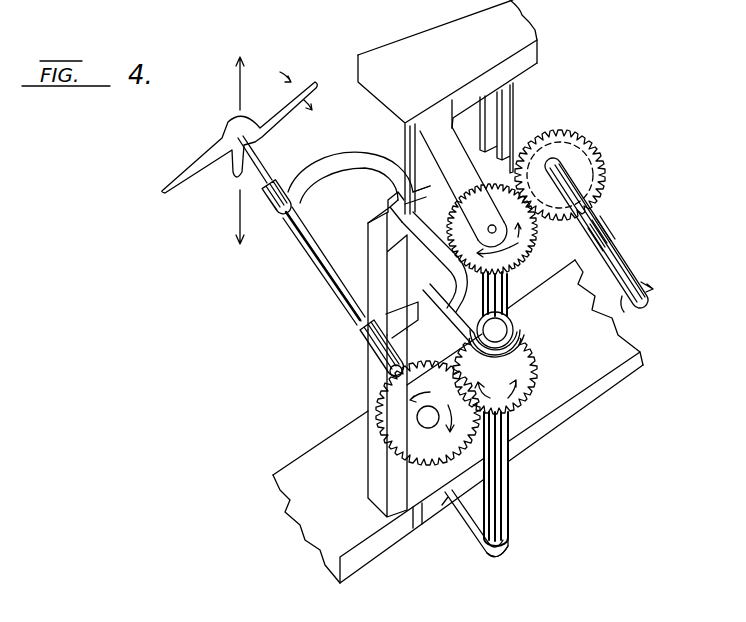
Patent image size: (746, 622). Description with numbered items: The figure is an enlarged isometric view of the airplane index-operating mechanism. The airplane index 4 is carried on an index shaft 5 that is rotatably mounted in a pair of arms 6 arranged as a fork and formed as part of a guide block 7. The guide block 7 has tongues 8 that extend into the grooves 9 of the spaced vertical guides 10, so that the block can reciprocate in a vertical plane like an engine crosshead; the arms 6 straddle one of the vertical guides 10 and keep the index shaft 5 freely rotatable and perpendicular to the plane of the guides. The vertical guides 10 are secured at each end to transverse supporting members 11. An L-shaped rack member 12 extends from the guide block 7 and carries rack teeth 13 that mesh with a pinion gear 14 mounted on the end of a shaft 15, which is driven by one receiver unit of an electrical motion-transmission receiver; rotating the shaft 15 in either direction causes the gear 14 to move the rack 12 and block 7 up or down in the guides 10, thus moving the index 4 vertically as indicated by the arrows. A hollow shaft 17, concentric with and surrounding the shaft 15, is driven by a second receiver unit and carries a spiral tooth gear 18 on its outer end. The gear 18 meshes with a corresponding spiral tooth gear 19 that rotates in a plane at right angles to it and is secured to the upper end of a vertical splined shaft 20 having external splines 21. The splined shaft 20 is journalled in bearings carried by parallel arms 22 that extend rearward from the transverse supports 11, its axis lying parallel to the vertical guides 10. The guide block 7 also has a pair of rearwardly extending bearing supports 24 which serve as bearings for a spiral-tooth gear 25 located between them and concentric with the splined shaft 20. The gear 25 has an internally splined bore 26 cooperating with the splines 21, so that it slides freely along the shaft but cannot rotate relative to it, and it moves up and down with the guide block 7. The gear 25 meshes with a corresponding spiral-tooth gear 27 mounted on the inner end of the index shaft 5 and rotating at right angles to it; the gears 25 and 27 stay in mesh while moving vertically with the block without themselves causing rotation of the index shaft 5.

The airplane index 4 is at (193, 168).
The index shaft 5 is at (281, 173).
The arms 6 is at (329, 167).
The guide block 7 is at (429, 183).
The tongues 8 is at (401, 229).
The grooves 9 is at (388, 264).
The vertical guides 10 is at (511, 100).
The transverse supporting members 11 is at (533, 36).
The L-shaped rack member 12 is at (528, 330).
The rack teeth 13 is at (535, 298).
The pinion gear 14 is at (548, 132).
The shaft 15 is at (628, 270).
The hollow shaft 17 is at (612, 233).
The spiral tooth gear 18 is at (602, 190).
The spiral tooth gear 19 is at (535, 238).
The vertical splined shaft 20 is at (508, 470).
The splines 21 is at (506, 514).
The parallel arms 22 is at (509, 544).
The bearing supports 24 is at (466, 316).
The spiral-tooth gear 25 is at (530, 362).
The internally splined bore 26 is at (522, 350).
The spiral-tooth gear 27 is at (422, 458).